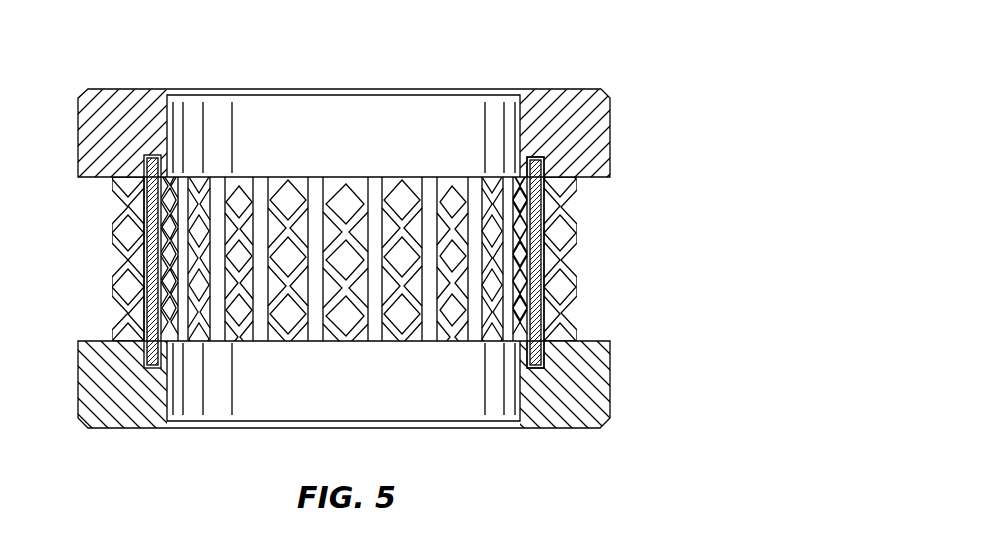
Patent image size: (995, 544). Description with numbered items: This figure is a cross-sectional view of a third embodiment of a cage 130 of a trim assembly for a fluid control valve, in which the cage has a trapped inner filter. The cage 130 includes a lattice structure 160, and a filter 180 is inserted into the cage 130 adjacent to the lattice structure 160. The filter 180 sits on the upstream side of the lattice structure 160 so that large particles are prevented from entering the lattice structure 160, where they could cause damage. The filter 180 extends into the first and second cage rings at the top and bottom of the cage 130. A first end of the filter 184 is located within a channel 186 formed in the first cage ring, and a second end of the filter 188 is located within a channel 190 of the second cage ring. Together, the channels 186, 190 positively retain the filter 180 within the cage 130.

The cage 130 is at (693, 88).
The lattice structure 160 is at (574, 240).
The filter 180 is at (517, 151).
The first end of the filter 184 is at (542, 153).
The channel 186 is at (534, 155).
The channel 190 is at (544, 362).
The second end of the filter 188 is at (536, 372).